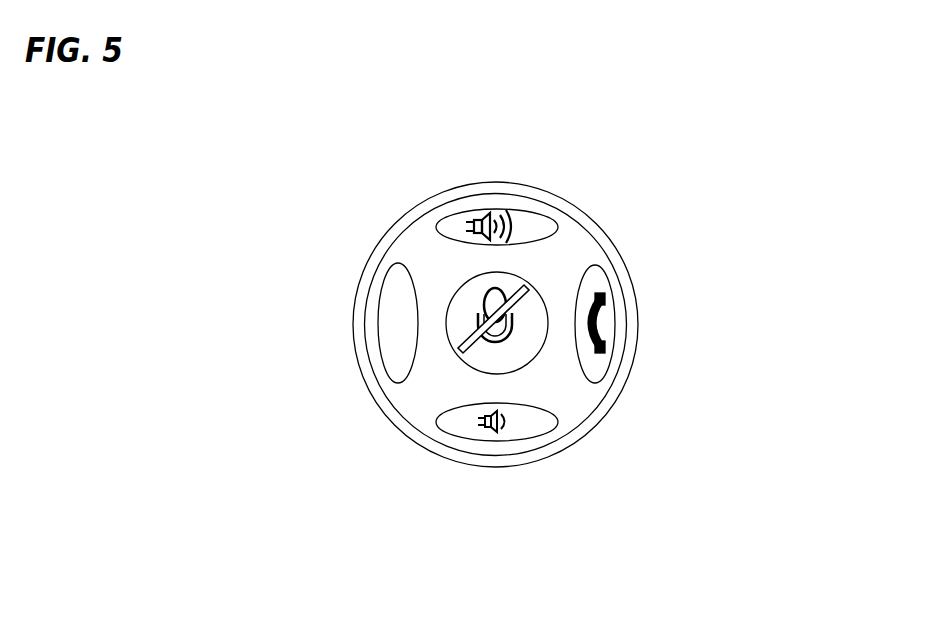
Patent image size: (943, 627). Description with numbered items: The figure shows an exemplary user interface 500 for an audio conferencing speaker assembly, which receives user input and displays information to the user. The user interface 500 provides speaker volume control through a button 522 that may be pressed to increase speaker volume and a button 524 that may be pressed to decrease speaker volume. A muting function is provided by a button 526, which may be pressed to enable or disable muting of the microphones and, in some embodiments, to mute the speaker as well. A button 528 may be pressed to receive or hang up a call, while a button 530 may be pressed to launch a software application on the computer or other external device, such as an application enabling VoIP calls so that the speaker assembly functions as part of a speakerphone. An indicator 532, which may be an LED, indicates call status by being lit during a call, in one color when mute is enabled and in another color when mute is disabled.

The user interface 500 is at (732, 98).
The button 522 is at (478, 218).
The button 524 is at (498, 376).
The button 526 is at (513, 423).
The button 528 is at (598, 304).
The button 530 is at (395, 303).
The indicator 532 is at (601, 236).